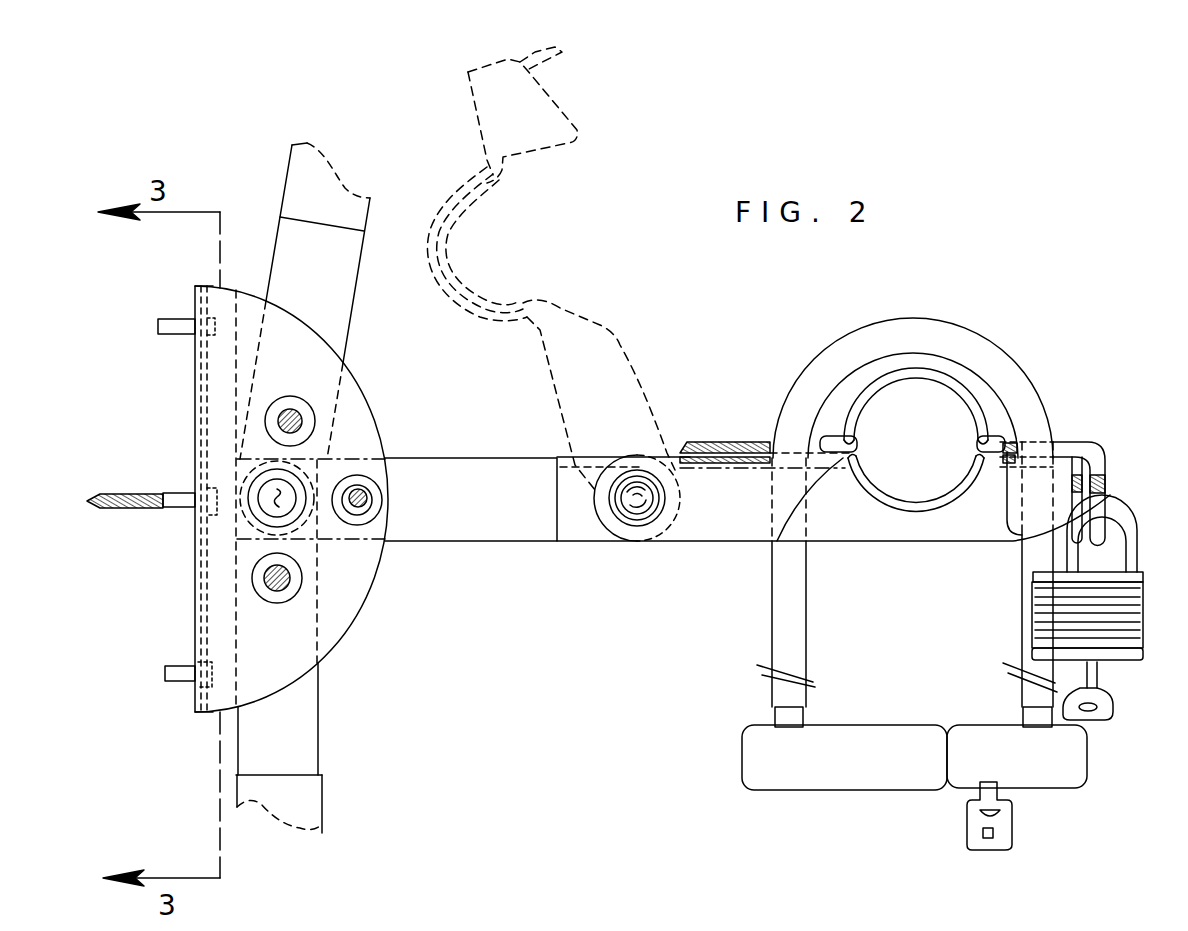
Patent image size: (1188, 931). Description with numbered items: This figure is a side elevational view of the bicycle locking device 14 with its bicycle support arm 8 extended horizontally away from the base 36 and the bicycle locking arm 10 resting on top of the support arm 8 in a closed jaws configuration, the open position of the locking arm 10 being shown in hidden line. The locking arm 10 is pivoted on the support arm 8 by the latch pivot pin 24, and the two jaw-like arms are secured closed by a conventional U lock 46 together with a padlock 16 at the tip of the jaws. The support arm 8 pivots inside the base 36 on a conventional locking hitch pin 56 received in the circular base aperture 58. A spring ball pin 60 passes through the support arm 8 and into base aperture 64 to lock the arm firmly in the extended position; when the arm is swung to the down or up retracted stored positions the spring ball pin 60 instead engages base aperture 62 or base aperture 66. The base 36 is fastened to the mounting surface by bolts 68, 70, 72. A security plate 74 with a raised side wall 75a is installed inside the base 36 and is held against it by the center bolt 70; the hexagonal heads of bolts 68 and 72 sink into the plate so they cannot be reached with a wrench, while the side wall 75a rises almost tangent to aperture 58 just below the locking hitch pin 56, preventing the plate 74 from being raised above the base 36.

The bicycle support arm 8 is at (347, 288).
The bicycle locking arm 10 is at (583, 363).
The bicycle locking device 14 is at (436, 458).
The padlock 16 is at (1127, 653).
The latch pivot pin 24 is at (645, 527).
The base 36 is at (327, 640).
The U lock 46 is at (778, 612).
The locking hitch pin 56 is at (283, 505).
The circular base aperture 58 is at (297, 535).
The spring ball pin 60 is at (363, 502).
The base aperture for down retracted position 62 is at (281, 598).
The base aperture for extended position 64 is at (373, 517).
The base aperture for up retracted position 66 is at (320, 423).
The bolt 68 is at (177, 682).
The center bolt 70 is at (122, 505).
The bolt 72 is at (168, 335).
The security plate 74 is at (195, 630).
The raised side wall 75a is at (232, 438).